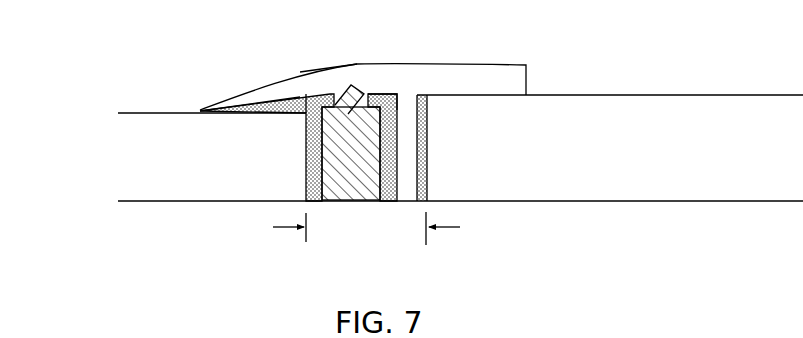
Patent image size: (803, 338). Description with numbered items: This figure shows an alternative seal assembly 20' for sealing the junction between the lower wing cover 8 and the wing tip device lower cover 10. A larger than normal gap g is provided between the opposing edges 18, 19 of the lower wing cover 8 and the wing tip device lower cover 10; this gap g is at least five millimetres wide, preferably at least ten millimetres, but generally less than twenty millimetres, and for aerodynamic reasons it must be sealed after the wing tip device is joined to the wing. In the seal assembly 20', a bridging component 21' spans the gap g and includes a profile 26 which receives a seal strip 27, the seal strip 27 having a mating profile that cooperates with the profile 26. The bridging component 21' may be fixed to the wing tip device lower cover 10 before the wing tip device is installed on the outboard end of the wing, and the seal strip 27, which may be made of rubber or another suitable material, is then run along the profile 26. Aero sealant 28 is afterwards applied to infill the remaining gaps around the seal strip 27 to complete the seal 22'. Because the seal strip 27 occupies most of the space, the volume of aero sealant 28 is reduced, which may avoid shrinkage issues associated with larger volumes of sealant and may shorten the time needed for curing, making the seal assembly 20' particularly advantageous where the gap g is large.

The seal assembly 20' is at (415, 102).
The lower wing cover 8 is at (177, 165).
The wing tip device lower cover 10 is at (538, 173).
The edge of lower wing cover 18 is at (305, 173).
The seal strip 27 is at (313, 116).
The bridging component 21' is at (363, 61).
The profile 26 is at (328, 79).
The aero sealant 28 is at (402, 106).
The seal 22' is at (338, 190).
The gap g is at (281, 225).
The edge of wing tip device lower cover 19 is at (430, 173).